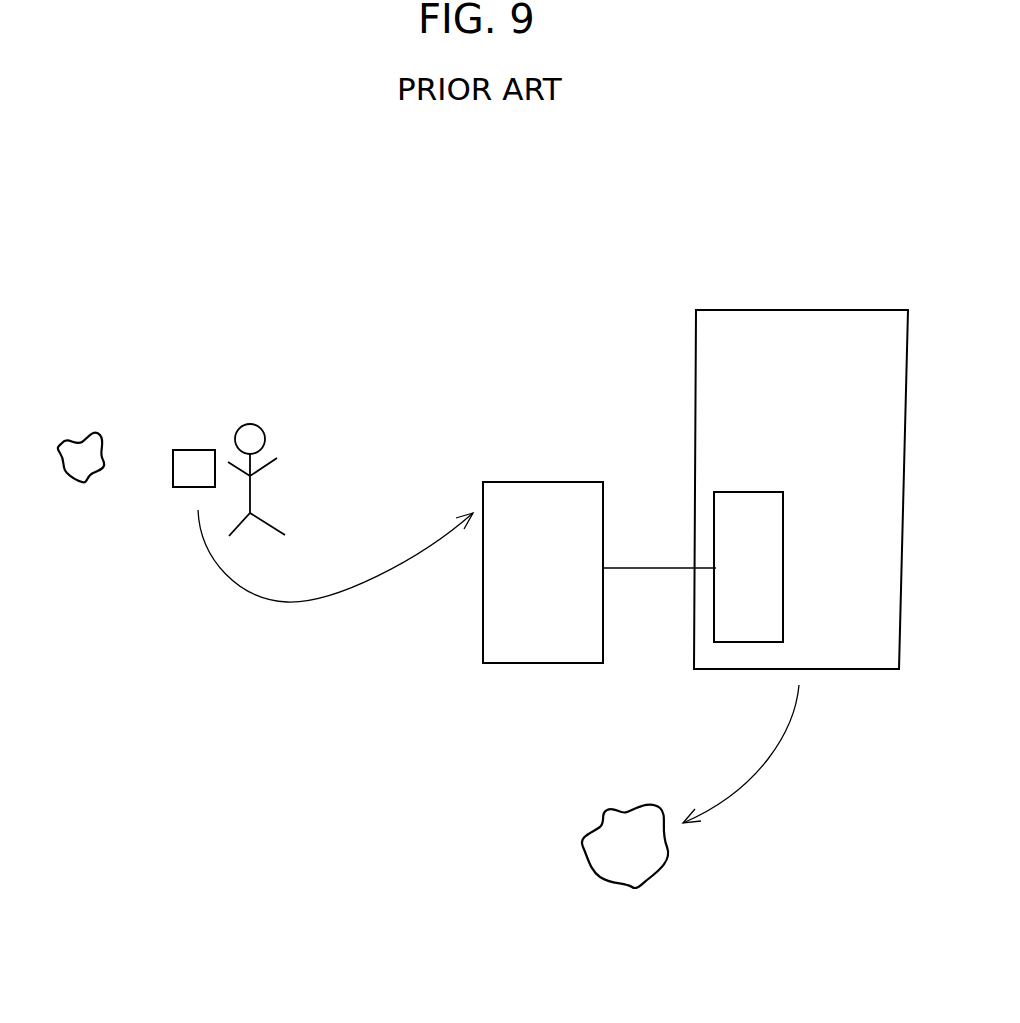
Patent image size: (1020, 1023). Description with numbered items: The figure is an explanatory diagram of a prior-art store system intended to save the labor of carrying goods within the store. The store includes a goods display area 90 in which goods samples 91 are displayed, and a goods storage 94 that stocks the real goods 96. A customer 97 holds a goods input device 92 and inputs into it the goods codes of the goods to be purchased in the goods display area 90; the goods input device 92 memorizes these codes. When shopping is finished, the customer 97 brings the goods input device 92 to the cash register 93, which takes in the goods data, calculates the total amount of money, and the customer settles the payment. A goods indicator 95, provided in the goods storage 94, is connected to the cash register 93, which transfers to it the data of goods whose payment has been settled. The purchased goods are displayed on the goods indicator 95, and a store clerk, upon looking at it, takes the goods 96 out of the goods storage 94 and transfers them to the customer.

The goods display area 90 is at (105, 410).
The goods samples 91 is at (88, 485).
The goods input device 92 is at (185, 442).
The cash register 93 is at (557, 482).
The goods storage 94 is at (812, 310).
The goods indicator 95 is at (750, 640).
The goods 96 is at (637, 887).
The customer 97 is at (258, 425).